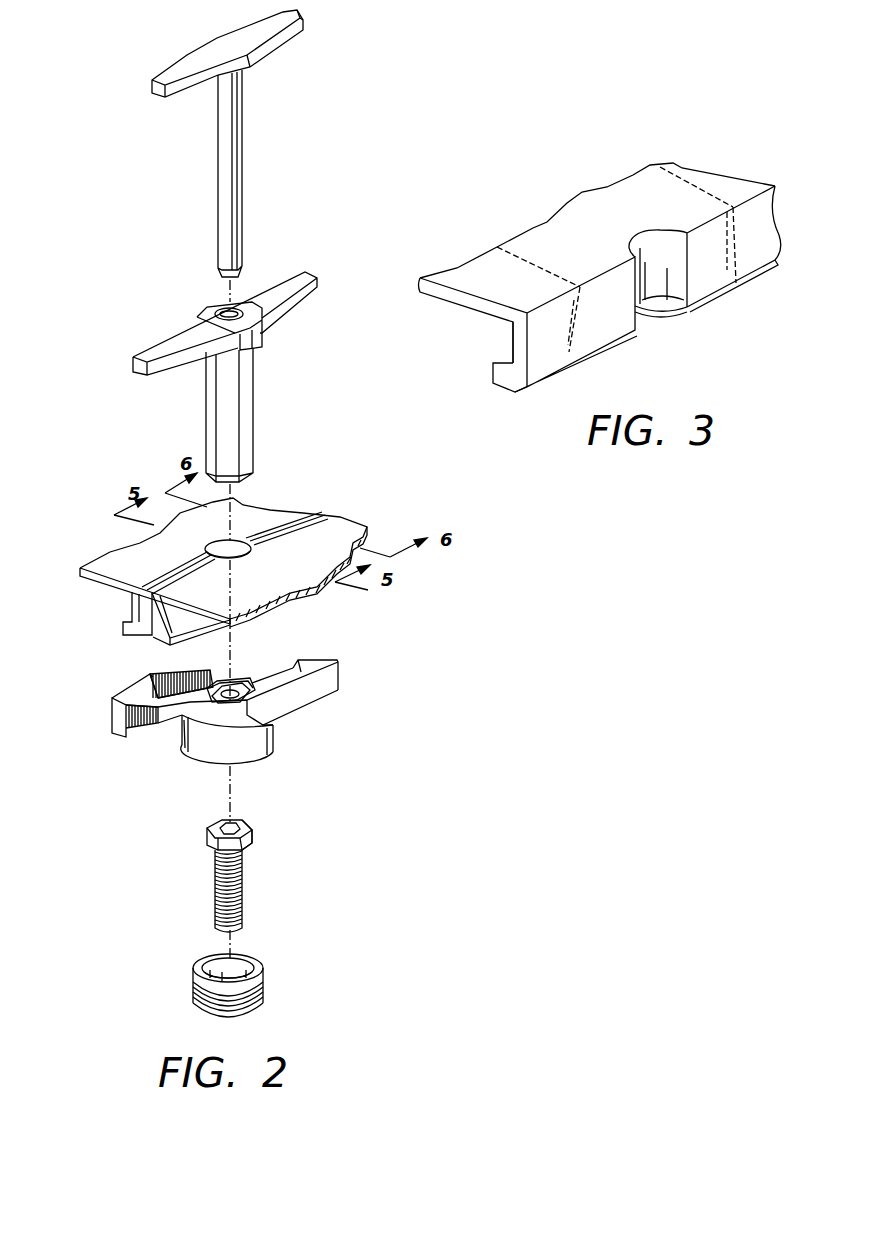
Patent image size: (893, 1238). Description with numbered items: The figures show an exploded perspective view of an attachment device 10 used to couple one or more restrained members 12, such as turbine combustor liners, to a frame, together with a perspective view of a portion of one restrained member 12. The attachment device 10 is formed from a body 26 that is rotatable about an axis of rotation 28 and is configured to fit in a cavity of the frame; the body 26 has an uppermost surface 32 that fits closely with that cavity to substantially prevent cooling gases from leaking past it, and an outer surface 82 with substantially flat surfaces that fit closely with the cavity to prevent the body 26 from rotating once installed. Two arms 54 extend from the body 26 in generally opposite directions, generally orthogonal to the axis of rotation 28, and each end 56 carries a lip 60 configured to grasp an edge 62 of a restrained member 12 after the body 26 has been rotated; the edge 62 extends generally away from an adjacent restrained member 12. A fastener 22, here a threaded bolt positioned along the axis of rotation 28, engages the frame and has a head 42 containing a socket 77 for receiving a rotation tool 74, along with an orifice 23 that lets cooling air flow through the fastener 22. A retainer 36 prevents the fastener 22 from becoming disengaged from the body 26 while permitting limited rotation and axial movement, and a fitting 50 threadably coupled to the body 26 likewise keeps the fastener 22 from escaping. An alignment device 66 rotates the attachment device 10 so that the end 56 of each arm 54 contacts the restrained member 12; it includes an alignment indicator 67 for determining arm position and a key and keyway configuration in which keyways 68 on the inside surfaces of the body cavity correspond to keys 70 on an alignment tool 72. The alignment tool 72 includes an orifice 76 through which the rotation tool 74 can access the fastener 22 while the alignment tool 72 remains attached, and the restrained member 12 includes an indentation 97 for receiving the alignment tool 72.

In FIG. 2, the attachment device 10 is at (370, 650).
In FIG. 2, the restrained member 12 is at (240, 535).
In FIG. 3, the restrained member 12 is at (589, 275).
In FIG. 2, the fastener 22 is at (252, 838).
In FIG. 2, the orifice 23 is at (237, 822).
In FIG. 2, the body 26 is at (238, 697).
In FIG. 2, the axis of rotation 28 is at (219, 858).
In FIG. 2, the uppermost surface 32 is at (258, 688).
In FIG. 2, the retainer 36 is at (228, 971).
In FIG. 2, the head 42 is at (208, 843).
In FIG. 2, the fitting 50 is at (193, 990).
In FIG. 2, the arm 54 is at (120, 690).
In FIG. 2, the end 56 is at (118, 722).
In FIG. 2, the lip 60 is at (147, 720).
In FIG. 2, the edge 62 is at (127, 627).
In FIG. 3, the edge 62 is at (500, 380).
In FIG. 2, the alignment device 66 is at (238, 682).
In FIG. 2, the alignment indicator 67 is at (178, 743).
In FIG. 2, the keyway 68 is at (261, 655).
In FIG. 2, the key 70 is at (205, 412).
In FIG. 2, the alignment tool 72 is at (235, 280).
In FIG. 2, the rotation tool 74 is at (245, 148).
In FIG. 2, the orifice 76 is at (238, 310).
In FIG. 2, the socket 77 is at (245, 840).
In FIG. 2, the outer surface 82 is at (174, 757).
In FIG. 2, the indentation 97 is at (208, 554).
In FIG. 3, the indentation 97 is at (653, 275).